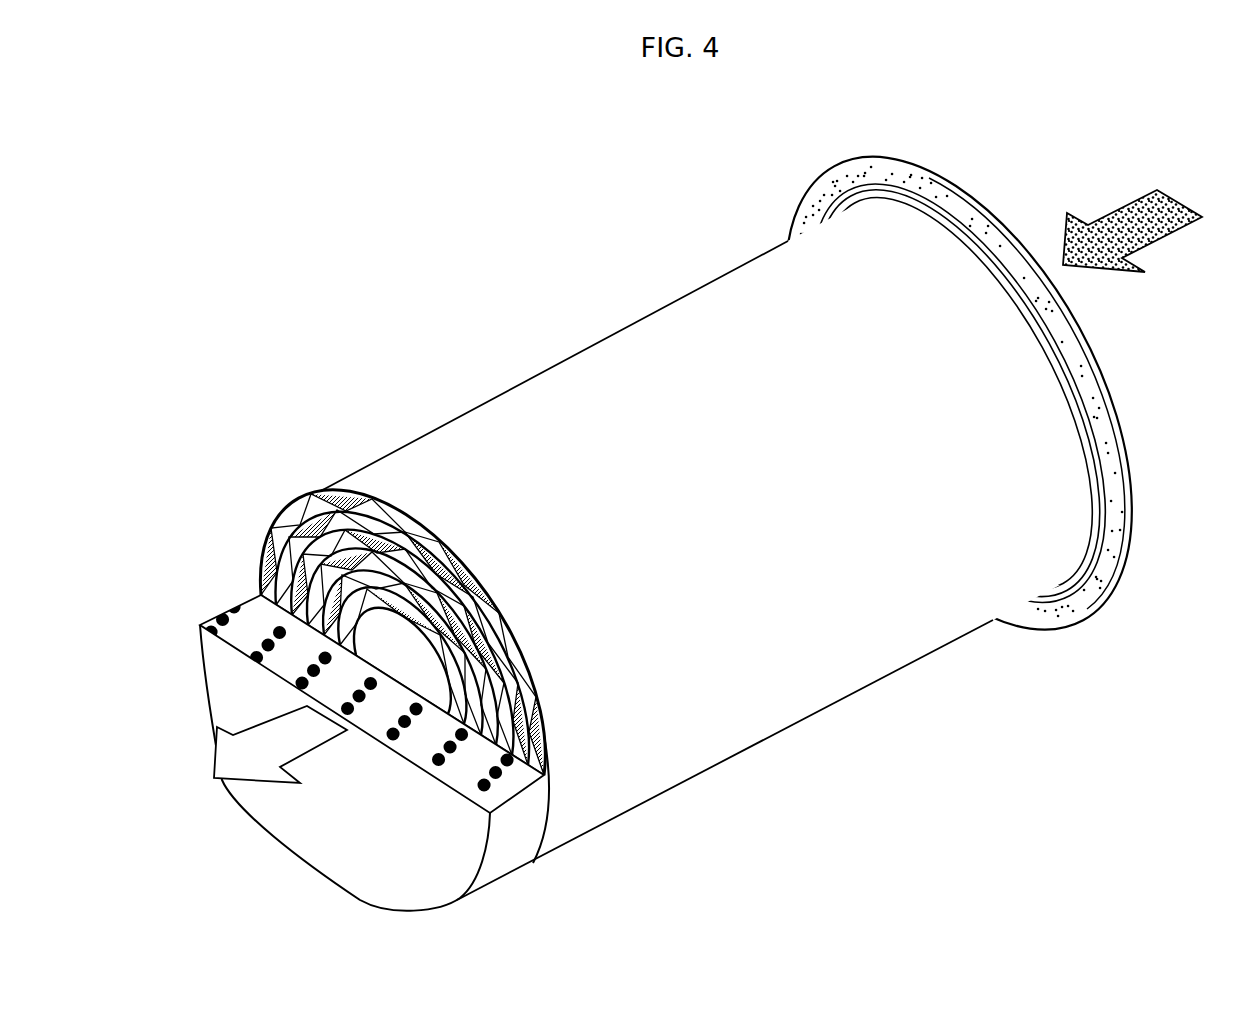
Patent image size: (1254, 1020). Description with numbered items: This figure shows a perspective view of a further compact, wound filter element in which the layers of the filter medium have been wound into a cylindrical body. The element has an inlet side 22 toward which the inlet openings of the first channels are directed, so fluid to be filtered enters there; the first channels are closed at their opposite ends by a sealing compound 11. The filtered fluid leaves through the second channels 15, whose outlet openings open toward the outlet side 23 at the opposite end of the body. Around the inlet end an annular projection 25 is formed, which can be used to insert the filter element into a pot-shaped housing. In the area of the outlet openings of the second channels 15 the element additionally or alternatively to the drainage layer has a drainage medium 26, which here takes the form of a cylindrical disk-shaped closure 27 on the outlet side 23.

The sealing compound 11 is at (268, 546).
The second channels 15 is at (287, 510).
The inlet side 22 is at (1137, 230).
The outlet side 23 is at (243, 755).
The annular projection 25 is at (1083, 598).
The drainage medium 26 is at (250, 660).
The cylindrical disk-shaped closure 27 is at (515, 848).